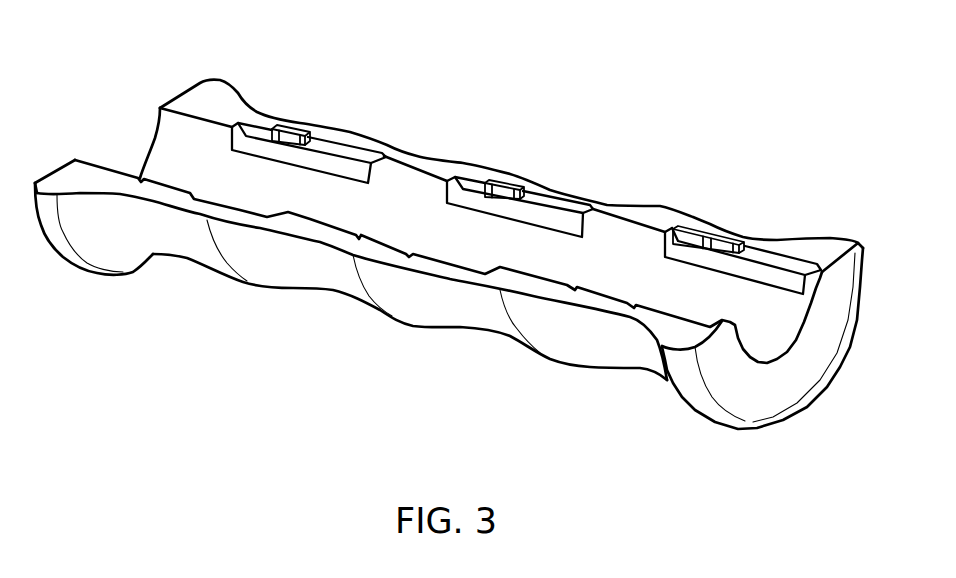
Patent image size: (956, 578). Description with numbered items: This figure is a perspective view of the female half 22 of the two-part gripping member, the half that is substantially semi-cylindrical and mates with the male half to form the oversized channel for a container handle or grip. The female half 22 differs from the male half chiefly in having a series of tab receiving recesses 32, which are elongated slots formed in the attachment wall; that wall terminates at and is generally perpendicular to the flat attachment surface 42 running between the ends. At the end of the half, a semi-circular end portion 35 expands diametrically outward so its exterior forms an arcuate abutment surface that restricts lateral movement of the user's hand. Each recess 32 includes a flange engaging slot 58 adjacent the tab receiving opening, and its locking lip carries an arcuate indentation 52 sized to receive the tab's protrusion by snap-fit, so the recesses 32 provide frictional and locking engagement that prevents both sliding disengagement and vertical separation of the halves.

The female half 22 is at (410, 310).
The tab receiving recess 32 is at (558, 205).
The semi-circular end portion 35 is at (137, 258).
The attachment surface 42 is at (217, 93).
The arcuate indentation 52 is at (488, 188).
The flange engaging slot 58 is at (287, 130).